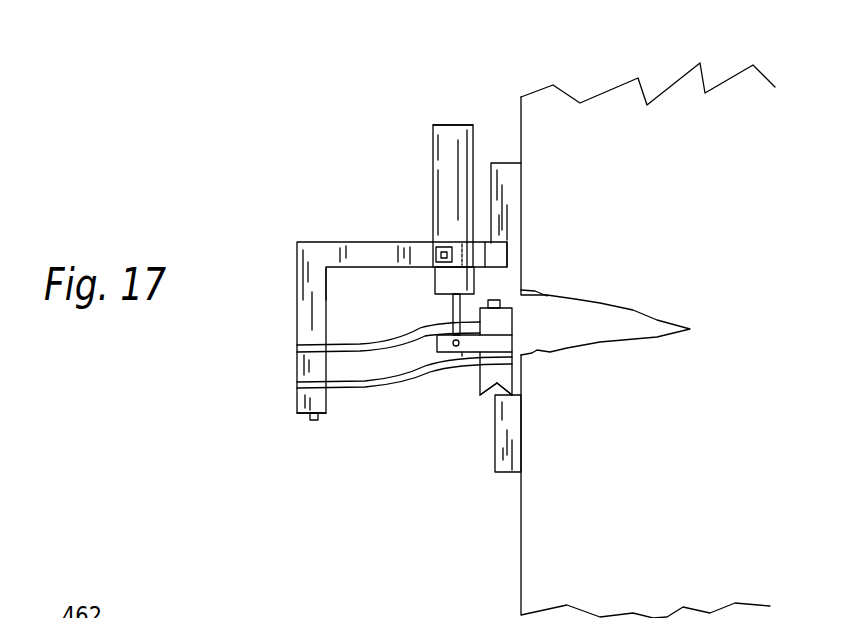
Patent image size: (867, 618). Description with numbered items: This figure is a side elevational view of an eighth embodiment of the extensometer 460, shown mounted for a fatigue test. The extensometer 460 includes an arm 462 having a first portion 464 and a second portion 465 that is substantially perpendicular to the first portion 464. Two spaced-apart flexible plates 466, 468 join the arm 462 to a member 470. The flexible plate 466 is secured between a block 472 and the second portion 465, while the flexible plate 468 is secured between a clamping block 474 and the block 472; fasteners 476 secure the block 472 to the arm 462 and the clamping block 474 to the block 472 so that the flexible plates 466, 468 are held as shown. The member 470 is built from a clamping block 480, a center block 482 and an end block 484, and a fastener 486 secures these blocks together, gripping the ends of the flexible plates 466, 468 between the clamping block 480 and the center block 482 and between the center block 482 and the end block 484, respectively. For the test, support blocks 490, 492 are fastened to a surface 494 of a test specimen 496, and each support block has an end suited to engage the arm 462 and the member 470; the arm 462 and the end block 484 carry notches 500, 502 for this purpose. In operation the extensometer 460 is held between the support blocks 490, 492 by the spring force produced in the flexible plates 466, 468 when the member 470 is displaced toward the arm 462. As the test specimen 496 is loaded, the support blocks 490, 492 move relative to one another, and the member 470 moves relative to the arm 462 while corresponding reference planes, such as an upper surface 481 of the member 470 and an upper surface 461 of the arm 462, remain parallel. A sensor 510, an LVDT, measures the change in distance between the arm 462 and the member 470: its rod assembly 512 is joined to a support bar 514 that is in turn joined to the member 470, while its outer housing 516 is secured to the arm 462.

The extensometer 460 is at (312, 205).
The upper surface of arm 461 is at (322, 240).
The arm 462 is at (393, 240).
The first portion 464 is at (348, 240).
The second portion 465 is at (328, 302).
The flexible plate 466 is at (357, 350).
The flexible plate 468 is at (387, 387).
The member 470 is at (461, 381).
The block 472 is at (298, 367).
The clamping block 474 is at (298, 409).
The fasteners 476 is at (312, 421).
The clamping block 480 is at (543, 297).
The upper surface of member 481 is at (493, 298).
The center block 482 is at (600, 305).
The end block 484 is at (512, 378).
The fastener 486 is at (503, 302).
The support block 490 is at (508, 482).
The support block 492 is at (500, 163).
The surface 494 is at (525, 573).
The test specimen 496 is at (525, 548).
The notch 500 is at (502, 241).
The notch 502 is at (497, 390).
The sensor 510 is at (458, 96).
The rod assembly 512 is at (450, 305).
The support bar 514 is at (437, 341).
The outer housing 516 is at (433, 126).